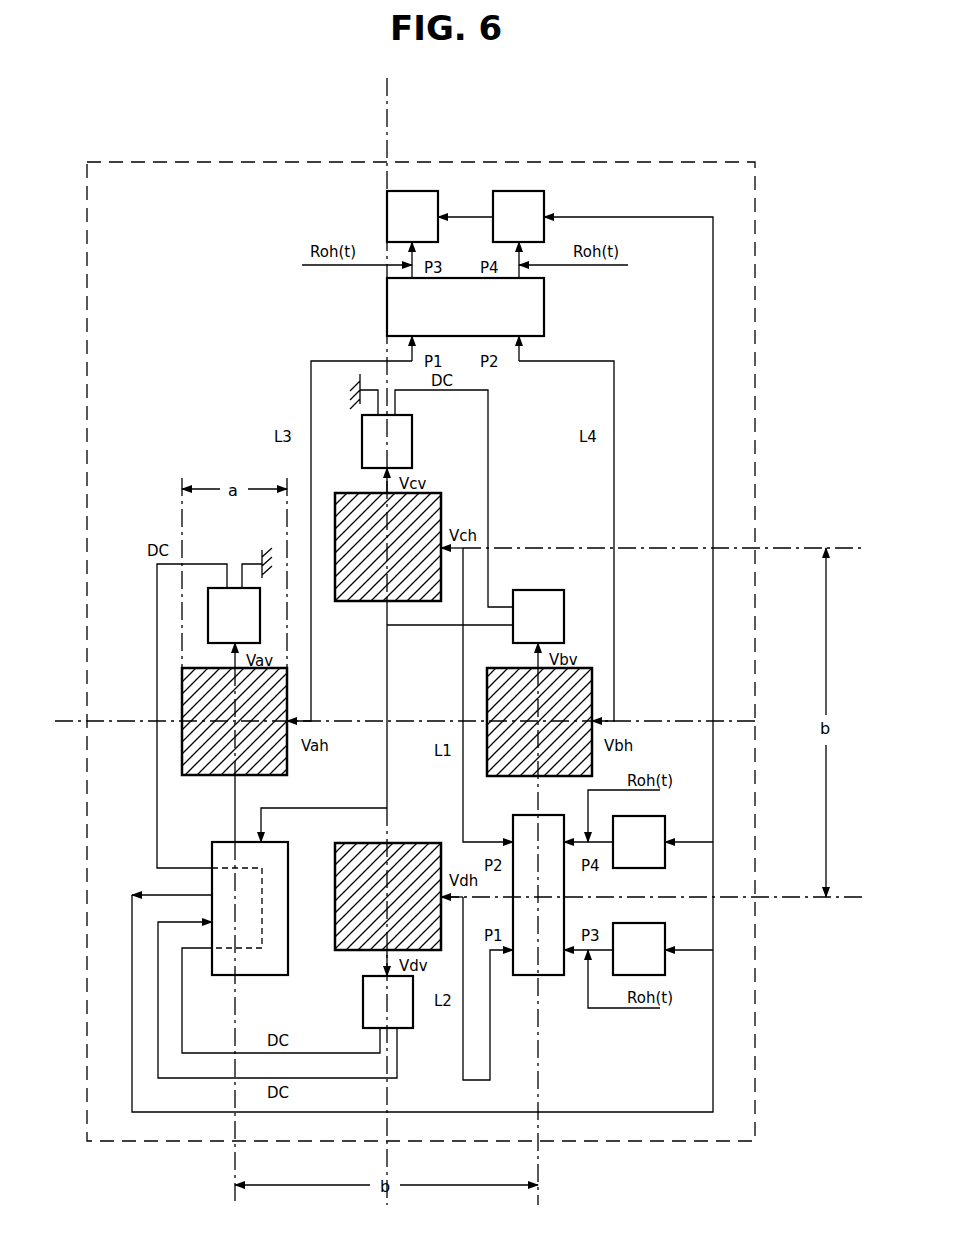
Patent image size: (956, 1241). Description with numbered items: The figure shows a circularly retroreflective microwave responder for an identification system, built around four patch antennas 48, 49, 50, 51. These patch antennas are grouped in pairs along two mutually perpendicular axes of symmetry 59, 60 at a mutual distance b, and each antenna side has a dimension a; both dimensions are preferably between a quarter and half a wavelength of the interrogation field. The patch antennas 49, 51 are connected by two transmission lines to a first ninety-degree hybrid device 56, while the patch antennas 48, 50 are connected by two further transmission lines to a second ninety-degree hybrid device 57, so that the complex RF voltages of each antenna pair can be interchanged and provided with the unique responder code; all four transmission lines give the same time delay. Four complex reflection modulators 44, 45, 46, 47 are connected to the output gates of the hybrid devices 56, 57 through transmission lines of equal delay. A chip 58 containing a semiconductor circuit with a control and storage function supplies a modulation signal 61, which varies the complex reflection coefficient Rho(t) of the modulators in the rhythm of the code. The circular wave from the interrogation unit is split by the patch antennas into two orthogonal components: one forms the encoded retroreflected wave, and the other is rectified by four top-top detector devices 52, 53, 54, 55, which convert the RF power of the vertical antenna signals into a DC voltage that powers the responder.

The complex reflection modulator 44 is at (520, 197).
The complex reflection modulator 45 is at (413, 197).
The complex reflection modulator 46 is at (660, 830).
The complex reflection modulator 47 is at (660, 941).
The patch antenna 48 is at (432, 512).
The patch antenna 49 is at (580, 690).
The patch antenna 50 is at (426, 846).
The patch antenna 51 is at (188, 692).
The top-top detector device 52 is at (557, 607).
The top-top detector device 53 is at (405, 443).
The top-top detector device 54 is at (213, 612).
The top-top detector device 55 is at (365, 1003).
The 90° hybrid device 56 is at (532, 308).
The 90° hybrid device 57 is at (550, 975).
The chip 58 is at (217, 856).
The axis of symmetry 59 is at (125, 727).
The axis of symmetry 60 is at (385, 134).
The modulation signal 61 is at (132, 1112).